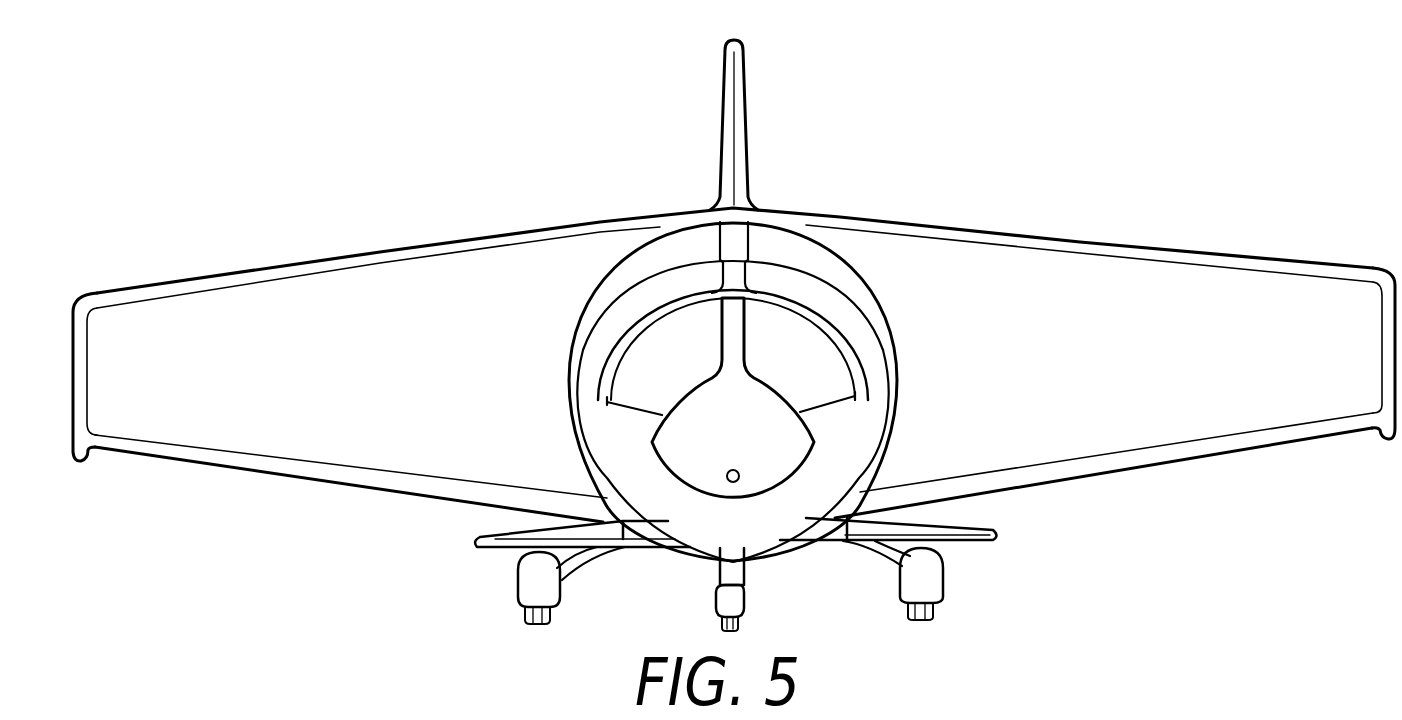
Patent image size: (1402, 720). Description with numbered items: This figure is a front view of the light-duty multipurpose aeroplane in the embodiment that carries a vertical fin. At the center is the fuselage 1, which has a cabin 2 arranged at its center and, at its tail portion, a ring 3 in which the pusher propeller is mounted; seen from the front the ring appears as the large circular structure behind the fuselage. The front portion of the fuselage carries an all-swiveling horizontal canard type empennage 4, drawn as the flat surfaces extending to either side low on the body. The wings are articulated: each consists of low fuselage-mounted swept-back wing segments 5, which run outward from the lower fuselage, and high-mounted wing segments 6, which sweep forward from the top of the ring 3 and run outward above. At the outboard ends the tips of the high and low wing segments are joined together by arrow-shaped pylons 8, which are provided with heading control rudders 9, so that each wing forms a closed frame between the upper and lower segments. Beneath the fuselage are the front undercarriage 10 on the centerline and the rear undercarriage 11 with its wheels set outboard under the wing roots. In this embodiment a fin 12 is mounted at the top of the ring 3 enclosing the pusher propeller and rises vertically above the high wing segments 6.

The fuselage 1 is at (703, 527).
The cabin 2 is at (650, 352).
The ring 3 is at (862, 284).
The all-swiveling horizontal canard type empennage 4 is at (495, 550).
The low fuselage-mounted swept-back wing segments 5 is at (1225, 443).
The high-mounted wing segments 6 is at (1103, 247).
The arrow-shaped pylons 8 is at (734, 321).
The heading control rudders 9 is at (1373, 267).
The front undercarriage 10 is at (744, 600).
The rear undercarriage 11 is at (936, 583).
The fin 12 is at (744, 100).